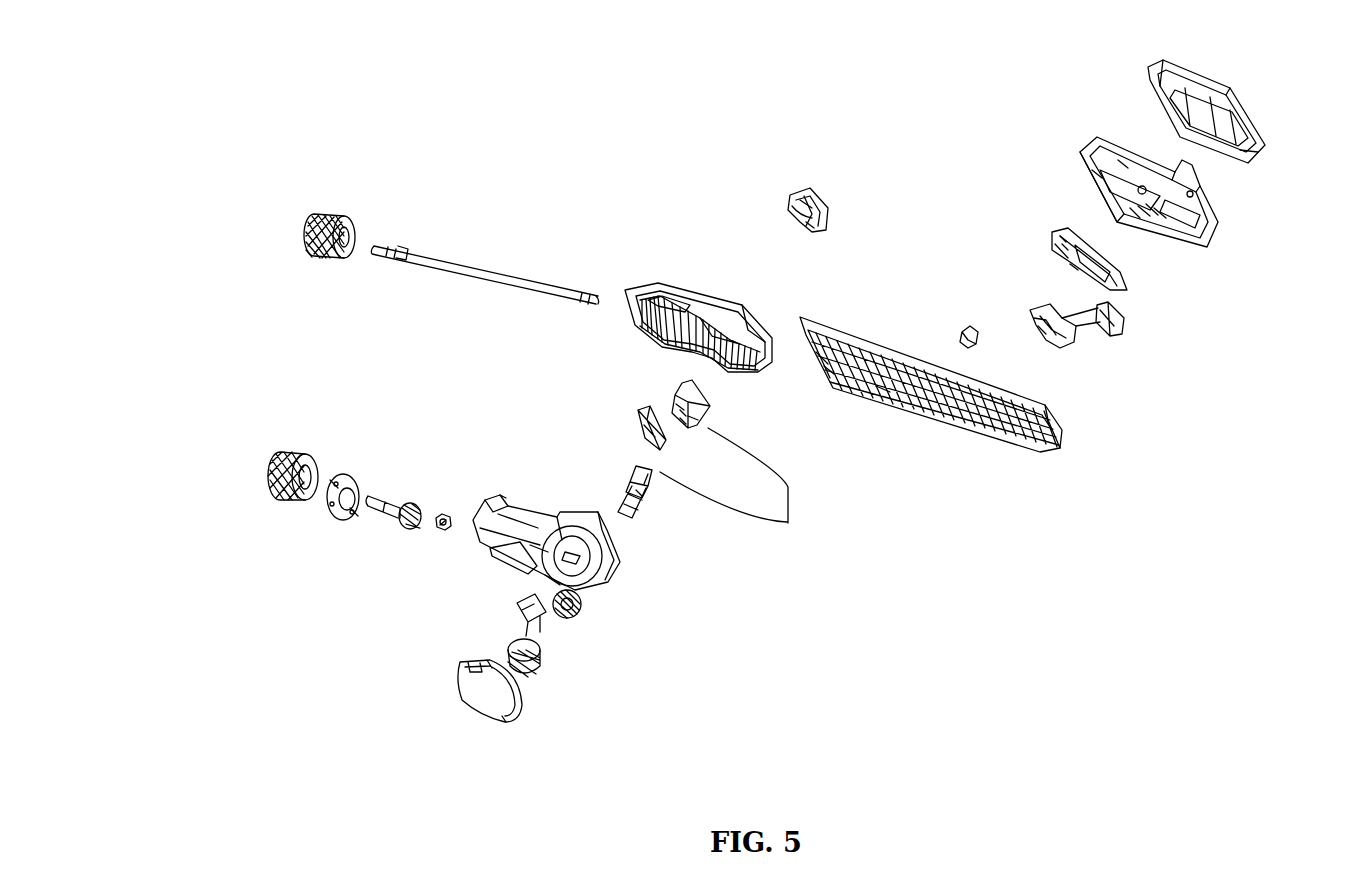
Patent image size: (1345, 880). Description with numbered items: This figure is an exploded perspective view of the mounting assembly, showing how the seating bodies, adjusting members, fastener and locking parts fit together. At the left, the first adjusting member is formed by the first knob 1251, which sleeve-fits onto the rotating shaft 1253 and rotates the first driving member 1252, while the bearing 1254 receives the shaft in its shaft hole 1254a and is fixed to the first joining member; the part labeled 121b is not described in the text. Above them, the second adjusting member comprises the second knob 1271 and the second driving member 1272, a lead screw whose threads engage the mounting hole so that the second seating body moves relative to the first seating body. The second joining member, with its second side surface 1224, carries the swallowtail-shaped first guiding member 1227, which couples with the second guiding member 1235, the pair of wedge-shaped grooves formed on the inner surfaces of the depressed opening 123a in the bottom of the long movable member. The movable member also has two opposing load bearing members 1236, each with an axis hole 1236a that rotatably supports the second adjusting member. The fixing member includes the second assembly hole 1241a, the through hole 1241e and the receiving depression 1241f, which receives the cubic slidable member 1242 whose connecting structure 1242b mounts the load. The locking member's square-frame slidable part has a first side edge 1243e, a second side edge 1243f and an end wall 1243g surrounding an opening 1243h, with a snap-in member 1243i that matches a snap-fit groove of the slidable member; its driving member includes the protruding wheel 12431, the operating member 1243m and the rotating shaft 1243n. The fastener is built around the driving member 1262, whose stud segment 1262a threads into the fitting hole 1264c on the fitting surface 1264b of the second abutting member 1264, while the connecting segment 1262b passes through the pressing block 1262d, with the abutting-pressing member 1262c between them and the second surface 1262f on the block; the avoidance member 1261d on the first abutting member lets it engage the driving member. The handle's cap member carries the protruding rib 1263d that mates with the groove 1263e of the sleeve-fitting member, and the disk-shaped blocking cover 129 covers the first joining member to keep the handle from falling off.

The frame 121b is at (540, 574).
The depressed opening 123a is at (822, 362).
The blocking cover 129 is at (462, 705).
The second side surface 1224 is at (656, 298).
The first guiding member 1227 is at (672, 290).
The second guiding member 1235 is at (880, 390).
The load bearing members 1236 is at (1062, 436).
The axis hole 1236a is at (828, 372).
The second assembly hole 1241a is at (1215, 234).
The through hole 1241e is at (1090, 177).
The receiving depression 1241f is at (1123, 157).
The slidable member 1242 is at (1188, 75).
The connecting structure 1242b is at (1250, 108).
The first side edge 1243e is at (1073, 240).
The second side edge 1243f is at (1090, 284).
The end wall 1243g is at (1118, 272).
The opening 1243h is at (1072, 270).
The snap-in member 1243i is at (1063, 243).
The operating member 1243m is at (1122, 330).
The rotating shaft 1243n is at (1048, 345).
The protruding wheel 12431 is at (1037, 342).
The first knob 1251 is at (276, 456).
The first driving member 1252 is at (402, 526).
The rotating shaft 1253 is at (374, 500).
The bearing 1254 is at (443, 514).
The shaft hole 1254a is at (443, 527).
The avoidance member 1261d is at (645, 430).
The driving member 1262 is at (754, 489).
The stud segment 1262a is at (654, 474).
The connecting segment 1262b is at (628, 478).
The abutting-pressing member 1262c is at (644, 484).
The pressing block 1262d is at (685, 390).
The second surface 1262f is at (690, 426).
The protruding rib 1263d is at (584, 608).
The groove 1263e is at (542, 670).
The second abutting member 1264 is at (808, 190).
The fitting surface 1264b is at (795, 206).
The fitting hole 1264c is at (796, 224).
The second knob 1271 is at (338, 214).
The second driving member 1272 is at (500, 290).